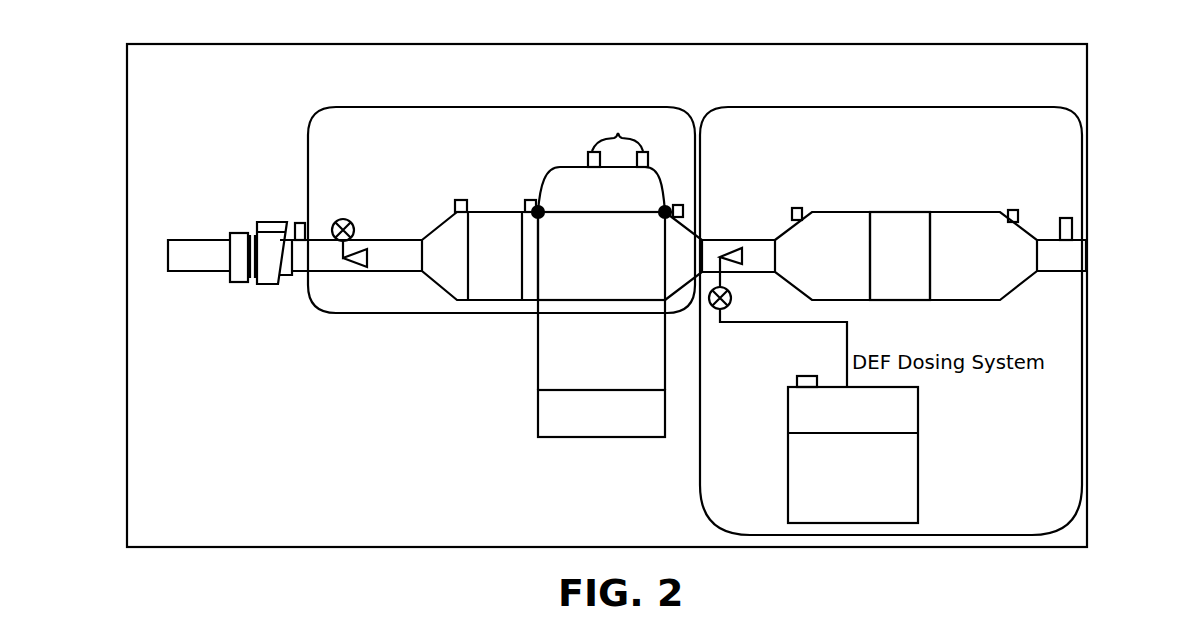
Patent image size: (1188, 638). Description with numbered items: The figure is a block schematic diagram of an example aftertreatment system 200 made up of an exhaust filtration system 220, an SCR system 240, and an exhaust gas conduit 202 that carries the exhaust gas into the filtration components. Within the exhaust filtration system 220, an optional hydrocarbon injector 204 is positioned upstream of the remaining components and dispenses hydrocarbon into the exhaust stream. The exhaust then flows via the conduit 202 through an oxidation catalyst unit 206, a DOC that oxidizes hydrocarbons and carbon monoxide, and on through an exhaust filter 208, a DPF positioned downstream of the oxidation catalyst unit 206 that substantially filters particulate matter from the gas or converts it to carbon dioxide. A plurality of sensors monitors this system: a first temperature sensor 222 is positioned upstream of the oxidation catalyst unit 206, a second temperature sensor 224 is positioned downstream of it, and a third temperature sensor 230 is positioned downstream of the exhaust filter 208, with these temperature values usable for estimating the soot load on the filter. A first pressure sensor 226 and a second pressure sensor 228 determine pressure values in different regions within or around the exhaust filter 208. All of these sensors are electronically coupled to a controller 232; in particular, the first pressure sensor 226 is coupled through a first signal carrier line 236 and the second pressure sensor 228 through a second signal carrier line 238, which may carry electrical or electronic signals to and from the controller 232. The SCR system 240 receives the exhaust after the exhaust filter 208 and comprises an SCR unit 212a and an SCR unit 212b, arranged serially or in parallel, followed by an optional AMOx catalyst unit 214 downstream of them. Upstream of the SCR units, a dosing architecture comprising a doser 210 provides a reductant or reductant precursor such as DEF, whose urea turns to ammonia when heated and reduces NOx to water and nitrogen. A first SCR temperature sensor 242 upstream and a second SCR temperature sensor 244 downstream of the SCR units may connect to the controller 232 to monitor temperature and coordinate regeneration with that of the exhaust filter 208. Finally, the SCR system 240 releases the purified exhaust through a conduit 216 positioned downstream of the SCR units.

The aftertreatment system 200 is at (106, 93).
The exhaust gas conduit 202 is at (305, 290).
The hydrocarbon injector 204 is at (343, 219).
The oxidation catalyst unit 206 is at (480, 293).
The exhaust filter 208 is at (563, 292).
The doser 210 is at (788, 461).
The SCR unit 212a is at (847, 212).
The SCR unit 212b is at (907, 212).
The AMOx catalyst unit 214 is at (965, 292).
The conduit 216 is at (1068, 273).
The exhaust filtration system 220 is at (501, 193).
The first temperature sensor 222 is at (455, 207).
The second temperature sensor 224 is at (524, 207).
The first pressure sensor 226 is at (594, 151).
The second pressure sensor 228 is at (643, 151).
The third temperature sensor 230 is at (684, 212).
The controller 232 is at (538, 423).
The first signal carrier line 236 is at (537, 383).
The second signal carrier line 238 is at (665, 385).
The SCR system 240 is at (891, 305).
The first SCR temperature sensor 242 is at (790, 214).
The second SCR temperature sensor 244 is at (1012, 216).